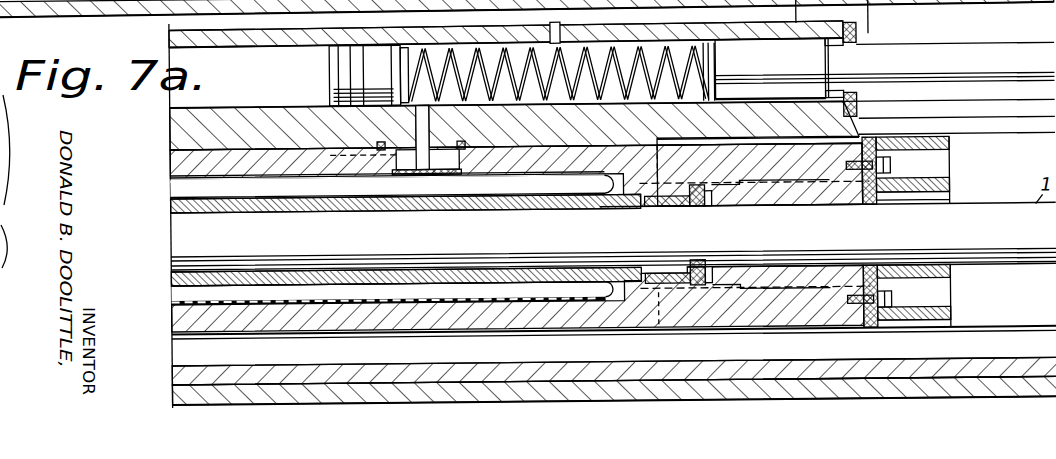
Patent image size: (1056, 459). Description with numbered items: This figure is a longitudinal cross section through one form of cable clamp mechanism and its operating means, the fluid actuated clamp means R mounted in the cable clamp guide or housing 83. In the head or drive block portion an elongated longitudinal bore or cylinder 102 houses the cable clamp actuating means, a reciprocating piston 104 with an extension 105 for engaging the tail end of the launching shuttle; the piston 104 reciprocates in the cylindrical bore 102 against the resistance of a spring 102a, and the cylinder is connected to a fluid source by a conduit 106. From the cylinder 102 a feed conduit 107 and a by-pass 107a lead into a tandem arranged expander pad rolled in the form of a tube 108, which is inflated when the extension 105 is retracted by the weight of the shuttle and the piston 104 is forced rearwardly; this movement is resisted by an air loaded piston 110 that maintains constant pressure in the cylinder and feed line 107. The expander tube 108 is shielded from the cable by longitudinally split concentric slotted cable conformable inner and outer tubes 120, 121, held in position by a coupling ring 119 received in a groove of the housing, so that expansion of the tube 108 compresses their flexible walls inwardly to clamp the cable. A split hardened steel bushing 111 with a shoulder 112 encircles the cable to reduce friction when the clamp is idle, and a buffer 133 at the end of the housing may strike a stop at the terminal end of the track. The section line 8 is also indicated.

The spring 102a is at (505, 60).
The conduit 106 is at (563, 28).
The cylindrical bore 102 is at (634, 28).
The section line 8 is at (777, 19).
The extension 105 is at (980, 47).
The reciprocating piston 104 is at (779, 68).
The air loaded piston 110 is at (331, 75).
The feed conduit 107 is at (333, 94).
The fluid actuated clamp means R is at (168, 184).
The outer slotted tube 121 is at (176, 204).
The inner slotted tube 120 is at (178, 214).
The expander tube 108 is at (310, 178).
The by-pass 107a is at (373, 192).
The hardened steel bushing 111 is at (807, 206).
The shoulder 112 is at (737, 293).
The buffer 133 is at (950, 195).
The coupling ring 119 is at (647, 296).
The cable clamp guide 83 is at (838, 330).